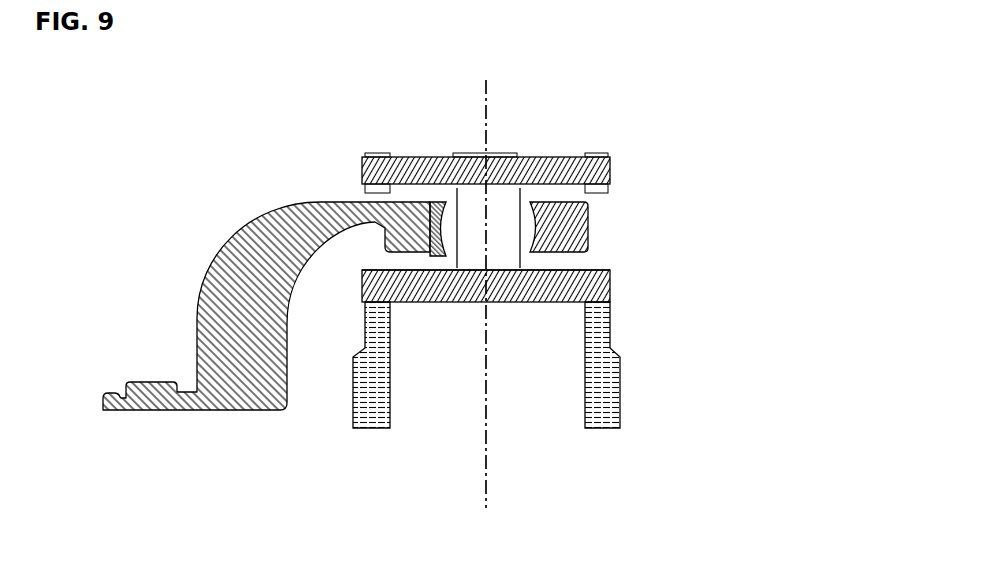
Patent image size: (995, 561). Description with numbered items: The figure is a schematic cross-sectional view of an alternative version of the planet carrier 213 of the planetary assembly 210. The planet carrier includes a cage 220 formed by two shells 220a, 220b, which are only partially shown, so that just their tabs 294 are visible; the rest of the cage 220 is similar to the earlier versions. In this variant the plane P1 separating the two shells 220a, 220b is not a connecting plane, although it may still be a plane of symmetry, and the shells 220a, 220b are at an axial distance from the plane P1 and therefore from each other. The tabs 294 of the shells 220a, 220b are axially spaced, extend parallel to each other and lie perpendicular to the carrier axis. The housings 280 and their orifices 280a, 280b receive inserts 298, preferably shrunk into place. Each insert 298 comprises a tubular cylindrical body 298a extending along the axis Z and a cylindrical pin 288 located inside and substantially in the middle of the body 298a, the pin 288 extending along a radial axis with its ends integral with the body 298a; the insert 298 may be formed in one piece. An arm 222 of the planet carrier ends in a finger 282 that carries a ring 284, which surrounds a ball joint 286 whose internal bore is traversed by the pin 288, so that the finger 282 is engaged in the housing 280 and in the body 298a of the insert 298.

The planet carrier 213 is at (465, 272).
The hinge assembly 210 is at (465, 272).
The cage 220 is at (613, 141).
The shell 220a is at (365, 428).
The shell 220b is at (605, 428).
The arm 222 is at (266, 290).
The housing 280 is at (436, 328).
The orifice 280a is at (372, 302).
The orifice 280b is at (603, 291).
The finger 282 is at (255, 242).
The bearing ring 284 is at (437, 238).
The ball joint 286 is at (529, 231).
The cylindrical pin 288 is at (470, 212).
The tab 294 is at (490, 397).
The insert 298 is at (540, 316).
The tubular cylindrical body 298a is at (523, 288).
The plane P1 is at (486, 112).
The axis Z is at (487, 213).